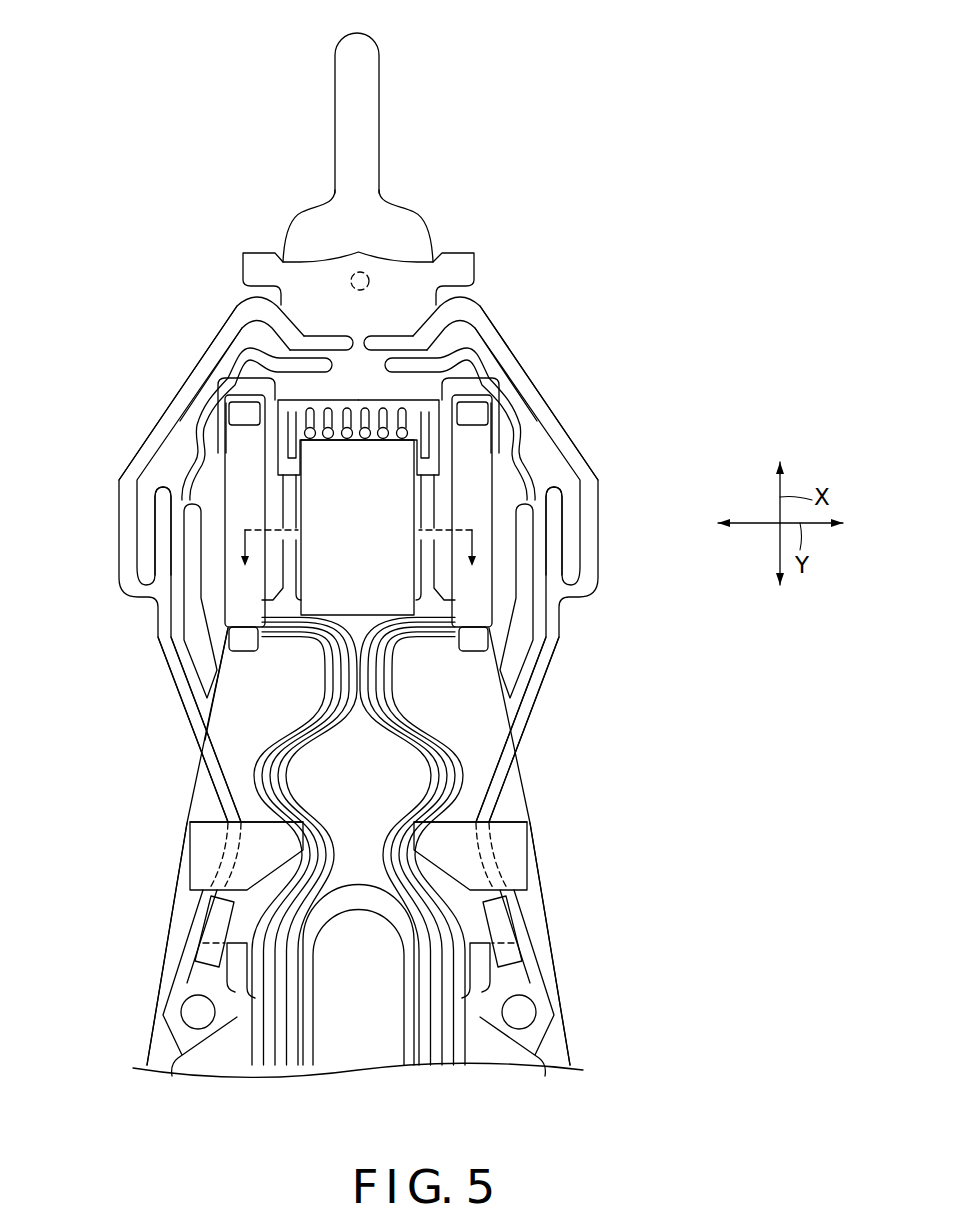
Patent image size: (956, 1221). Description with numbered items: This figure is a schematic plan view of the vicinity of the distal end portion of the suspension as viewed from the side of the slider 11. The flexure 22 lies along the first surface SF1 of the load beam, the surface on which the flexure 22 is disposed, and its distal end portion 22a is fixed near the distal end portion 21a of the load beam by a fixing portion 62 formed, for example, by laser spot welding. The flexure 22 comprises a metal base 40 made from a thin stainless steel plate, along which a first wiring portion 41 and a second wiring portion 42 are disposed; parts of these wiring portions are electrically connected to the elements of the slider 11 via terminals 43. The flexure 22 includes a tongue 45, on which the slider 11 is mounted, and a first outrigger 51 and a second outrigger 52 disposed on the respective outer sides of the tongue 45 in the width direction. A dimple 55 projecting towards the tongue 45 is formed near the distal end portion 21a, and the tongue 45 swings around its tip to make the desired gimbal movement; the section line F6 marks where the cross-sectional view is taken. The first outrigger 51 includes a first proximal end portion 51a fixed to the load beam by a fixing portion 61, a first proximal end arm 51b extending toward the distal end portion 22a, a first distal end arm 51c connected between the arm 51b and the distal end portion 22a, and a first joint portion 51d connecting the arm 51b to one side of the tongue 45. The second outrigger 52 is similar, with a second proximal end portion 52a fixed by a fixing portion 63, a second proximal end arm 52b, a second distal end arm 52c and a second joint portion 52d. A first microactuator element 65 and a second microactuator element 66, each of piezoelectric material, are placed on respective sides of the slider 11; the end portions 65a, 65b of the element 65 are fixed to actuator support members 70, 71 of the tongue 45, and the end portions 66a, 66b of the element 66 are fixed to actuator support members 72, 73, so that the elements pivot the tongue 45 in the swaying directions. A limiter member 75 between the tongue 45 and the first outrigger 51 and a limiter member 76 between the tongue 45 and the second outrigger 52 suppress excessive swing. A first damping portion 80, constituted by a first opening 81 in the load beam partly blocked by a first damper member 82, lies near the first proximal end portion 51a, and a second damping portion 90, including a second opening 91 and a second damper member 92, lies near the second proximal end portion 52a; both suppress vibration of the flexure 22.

The distal end portion 21a is at (395, 42).
The distal end portion 22a is at (303, 287).
The fixing portion 62 is at (366, 268).
The flexure 22 is at (118, 577).
The terminals 43 is at (367, 405).
The actuator support member 71 is at (235, 385).
The limiter member 75 is at (222, 393).
The first distal end arm 51c is at (200, 395).
The end portion 65b is at (245, 430).
The first microactuator element 65 is at (238, 480).
The first joint portion 51d is at (168, 505).
The slider 11 is at (288, 508).
The actuator support member 70 is at (232, 615).
The end portion 65a is at (242, 645).
The first surface SF1 is at (237, 695).
The first outrigger 51 is at (182, 731).
The first proximal end arm 51b is at (216, 762).
The first opening 81 is at (237, 816).
The first damping portion 80 is at (170, 855).
The first damper member 82 is at (212, 888).
The first proximal end portion 51a is at (178, 1001).
The fixing portion 61 is at (200, 1029).
The metal base 40 is at (303, 1000).
The first wiring portion 41 is at (300, 787).
The second wiring portion 42 is at (420, 787).
The dimple 55 is at (358, 535).
The tongue 45 is at (422, 512).
The line F6- F6 is at (359, 566).
The actuator support member 73 is at (505, 392).
The second distal end arm 52c is at (527, 385).
The end portion 66b is at (480, 440).
The limiter member 76 is at (525, 487).
The second microactuator element 66 is at (482, 480).
The second joint portion 52d is at (548, 512).
The actuator support member 72 is at (480, 612).
The end portion 66a is at (478, 645).
The second outrigger 52 is at (535, 732).
The second proximal end arm 52b is at (500, 762).
The second opening 91 is at (480, 816).
The second damping portion 90 is at (548, 855).
The second damper member 92 is at (508, 888).
The second proximal end portion 52a is at (540, 1001).
The fixing portion 63 is at (518, 1029).